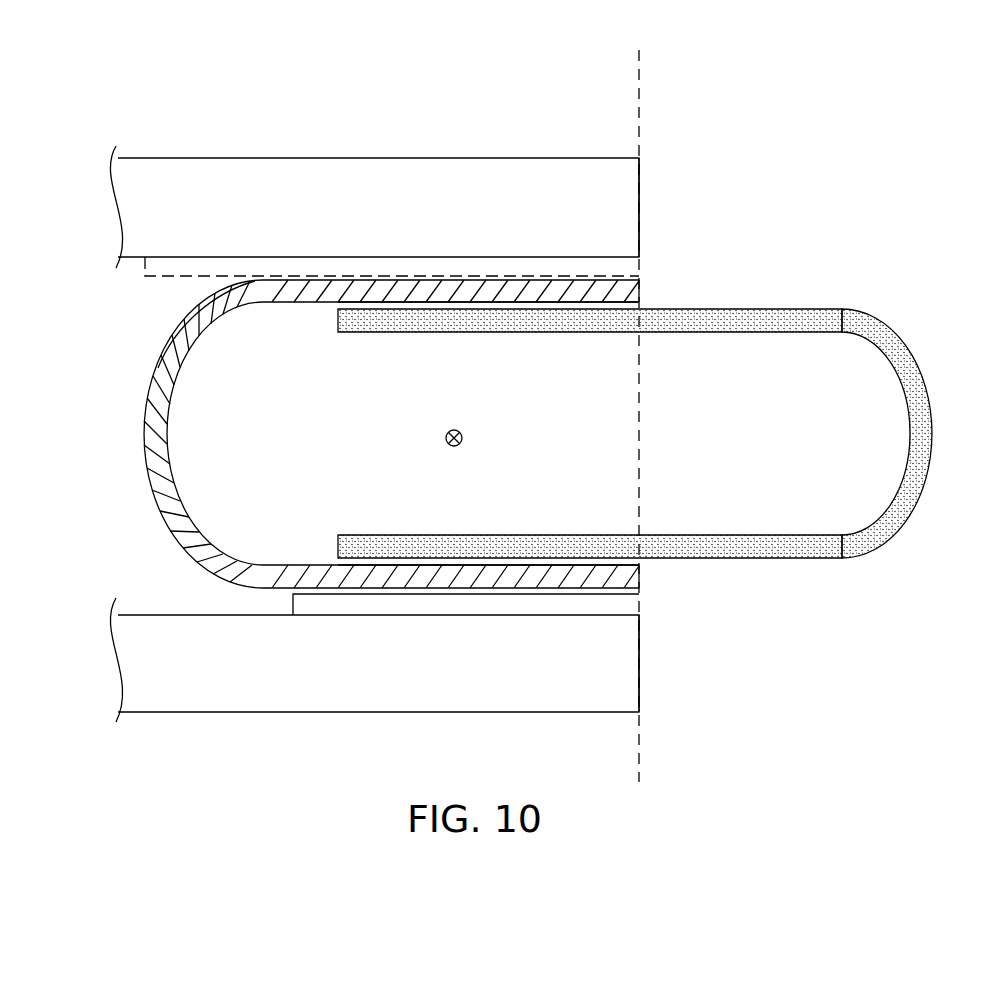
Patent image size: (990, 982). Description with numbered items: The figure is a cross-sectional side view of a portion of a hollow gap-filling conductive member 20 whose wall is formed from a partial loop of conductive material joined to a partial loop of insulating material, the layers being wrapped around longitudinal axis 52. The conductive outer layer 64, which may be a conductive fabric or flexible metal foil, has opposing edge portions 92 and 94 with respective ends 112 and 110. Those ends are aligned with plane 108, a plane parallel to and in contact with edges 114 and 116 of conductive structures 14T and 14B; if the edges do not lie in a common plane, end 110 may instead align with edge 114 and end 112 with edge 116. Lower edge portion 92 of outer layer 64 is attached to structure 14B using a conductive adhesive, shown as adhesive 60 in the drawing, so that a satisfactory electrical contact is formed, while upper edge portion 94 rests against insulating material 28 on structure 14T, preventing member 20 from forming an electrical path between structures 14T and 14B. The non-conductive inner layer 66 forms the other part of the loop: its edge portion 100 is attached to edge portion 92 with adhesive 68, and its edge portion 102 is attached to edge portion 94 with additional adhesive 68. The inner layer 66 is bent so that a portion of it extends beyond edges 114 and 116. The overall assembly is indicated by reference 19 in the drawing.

The conductive structure 14T is at (633, 173).
The conductive structure 14B is at (633, 685).
The plane 108 is at (639, 105).
The edge 114 is at (640, 187).
The end 110 is at (640, 288).
The insulating material 28 is at (632, 268).
The display 19 is at (768, 283).
The conductive member 20 is at (937, 351).
The edge portion 94 is at (476, 285).
The adhesive 68 is at (455, 305).
The edge portion 102 is at (537, 330).
The longitudinal axis 52 is at (462, 437).
The edge portion 100 is at (490, 543).
The outer layer 64 is at (162, 467).
The inner layer 66 is at (840, 545).
The edge portion 92 is at (492, 578).
The end 112 is at (640, 575).
The adhesive 60 is at (628, 603).
The edge 116 is at (640, 652).